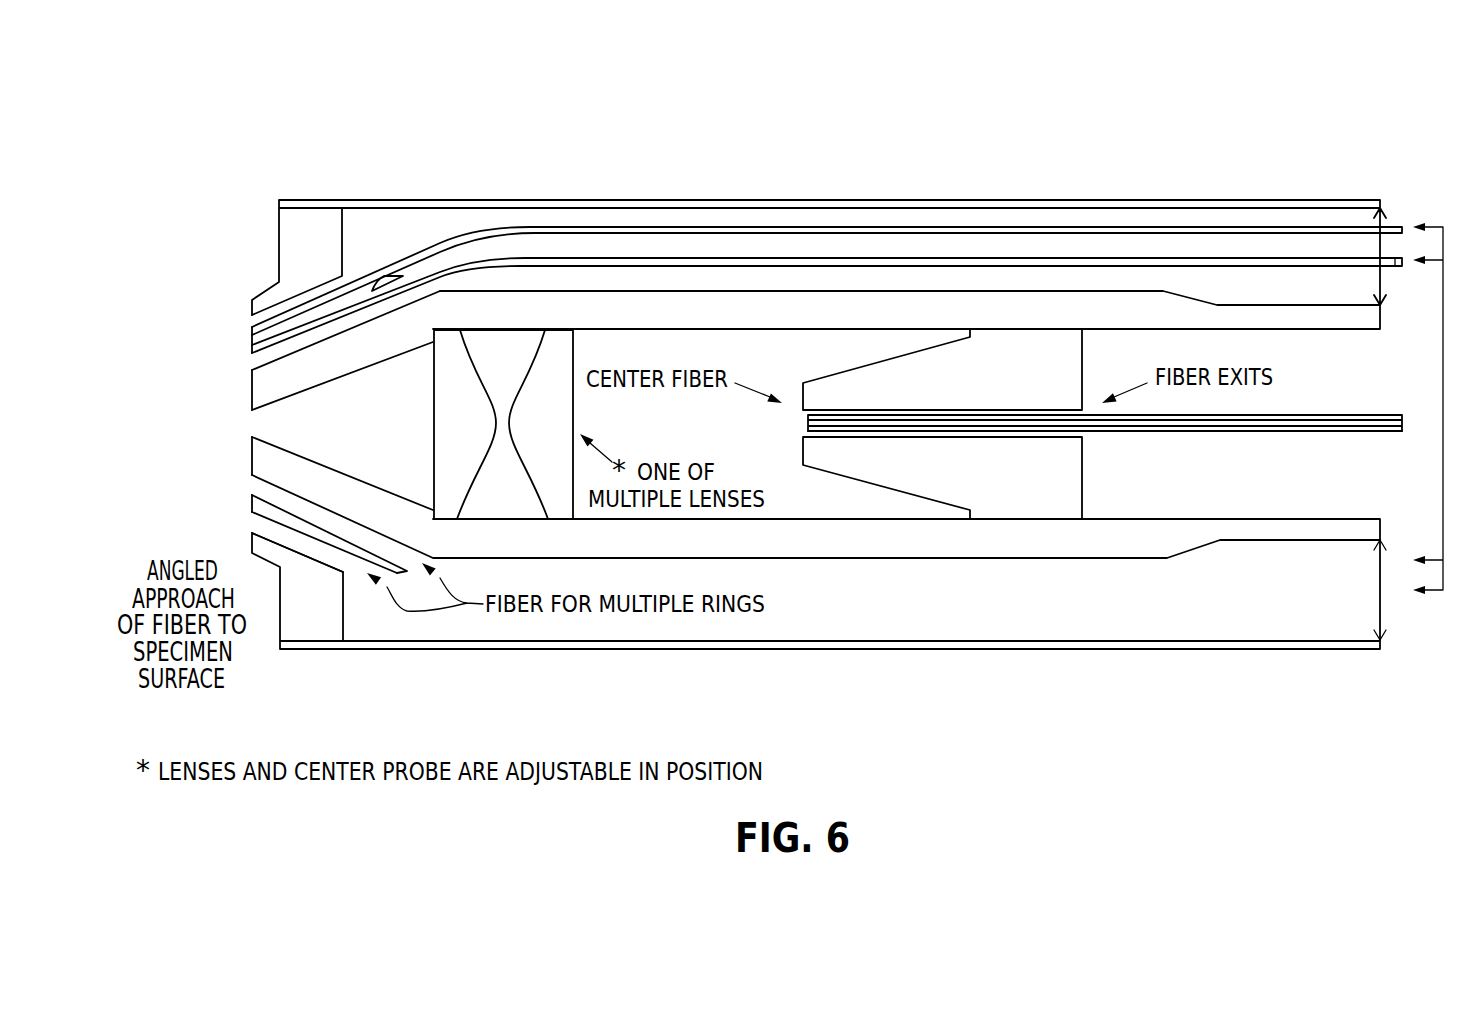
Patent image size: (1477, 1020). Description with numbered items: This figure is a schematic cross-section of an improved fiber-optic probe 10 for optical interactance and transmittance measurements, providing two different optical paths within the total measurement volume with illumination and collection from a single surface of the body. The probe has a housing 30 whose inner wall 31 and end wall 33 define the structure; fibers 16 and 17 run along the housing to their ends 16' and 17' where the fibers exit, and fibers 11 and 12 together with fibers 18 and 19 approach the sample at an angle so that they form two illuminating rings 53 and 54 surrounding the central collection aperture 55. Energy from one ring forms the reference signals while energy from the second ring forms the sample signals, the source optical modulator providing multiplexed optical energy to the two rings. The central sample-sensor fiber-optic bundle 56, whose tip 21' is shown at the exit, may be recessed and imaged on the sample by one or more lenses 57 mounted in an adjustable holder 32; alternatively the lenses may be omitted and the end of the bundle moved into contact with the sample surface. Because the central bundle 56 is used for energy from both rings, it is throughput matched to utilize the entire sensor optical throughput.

The optical probe 10 is at (1131, 121).
The lower fiber channel 11 is at (250, 519).
The lower fiber channel 12 is at (252, 482).
The illumination fiber 16 is at (827, 243).
The collection fiber 17 is at (827, 255).
The illumination fiber end 16' is at (1422, 388).
The collection fiber end 17' is at (1412, 282).
The ring fiber 18 is at (405, 557).
The ring fiber 19 is at (352, 565).
The center fiber tip 21' is at (1105, 453).
The probe housing 30 is at (914, 201).
The housing inner wall 31 is at (1133, 313).
The lens holder 32 is at (1094, 371).
The fiber sheath 33 is at (382, 290).
The illuminating ring 53 is at (246, 320).
The illuminating ring 54 is at (246, 359).
The central collection aperture 55 is at (254, 419).
The sample-sensor fiber-optic bundle 56 is at (796, 422).
The lenses 57 is at (543, 352).